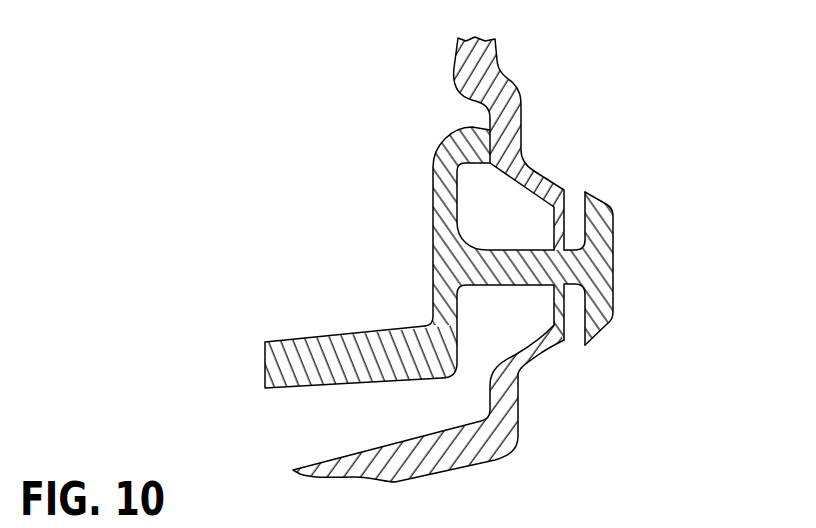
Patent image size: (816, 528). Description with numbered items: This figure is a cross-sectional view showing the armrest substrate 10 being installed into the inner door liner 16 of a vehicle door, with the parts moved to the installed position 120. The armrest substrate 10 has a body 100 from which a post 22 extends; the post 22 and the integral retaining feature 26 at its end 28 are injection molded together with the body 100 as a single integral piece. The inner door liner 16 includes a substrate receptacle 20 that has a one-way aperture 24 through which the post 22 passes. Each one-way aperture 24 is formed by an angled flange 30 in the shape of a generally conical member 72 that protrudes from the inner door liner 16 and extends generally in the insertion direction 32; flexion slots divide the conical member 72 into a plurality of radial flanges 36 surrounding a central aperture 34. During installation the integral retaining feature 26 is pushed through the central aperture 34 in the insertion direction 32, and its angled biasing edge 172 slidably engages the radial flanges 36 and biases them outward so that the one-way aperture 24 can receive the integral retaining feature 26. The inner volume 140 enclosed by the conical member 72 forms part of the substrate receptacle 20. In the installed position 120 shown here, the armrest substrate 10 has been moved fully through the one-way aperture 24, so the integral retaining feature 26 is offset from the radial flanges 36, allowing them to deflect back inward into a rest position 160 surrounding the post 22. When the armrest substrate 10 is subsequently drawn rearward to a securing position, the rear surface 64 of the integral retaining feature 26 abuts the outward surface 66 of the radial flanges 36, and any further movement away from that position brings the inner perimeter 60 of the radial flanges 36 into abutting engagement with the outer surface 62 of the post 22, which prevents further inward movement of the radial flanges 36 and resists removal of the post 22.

The armrest substrate 10 is at (320, 136).
The inner door liner 16 is at (473, 62).
The substrate receptacle 20 is at (611, 367).
The post 22 is at (484, 250).
The one-way aperture 24 is at (624, 205).
The integral retaining feature 26 is at (593, 331).
The end 28 is at (603, 267).
The angled flange 30 is at (521, 360).
The insertion direction 32 is at (354, 267).
The central aperture 34 is at (568, 222).
The radial flange 36 is at (556, 187).
The inner perimeter 60 is at (552, 307).
The outer surface 62 is at (507, 248).
The rear surface 64 is at (568, 310).
The outward surface 66 is at (582, 305).
The conical member 72 is at (575, 189).
The body 100 is at (318, 334).
The installed position 120 is at (628, 160).
The inner volume 140 is at (457, 388).
The rest position 160 is at (599, 447).
The angled biasing edge 172 is at (610, 203).